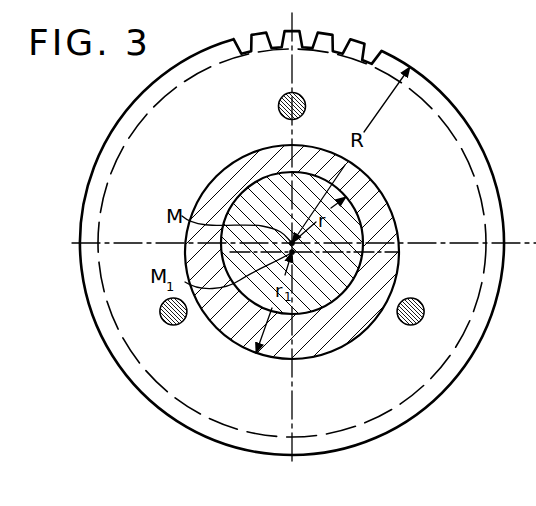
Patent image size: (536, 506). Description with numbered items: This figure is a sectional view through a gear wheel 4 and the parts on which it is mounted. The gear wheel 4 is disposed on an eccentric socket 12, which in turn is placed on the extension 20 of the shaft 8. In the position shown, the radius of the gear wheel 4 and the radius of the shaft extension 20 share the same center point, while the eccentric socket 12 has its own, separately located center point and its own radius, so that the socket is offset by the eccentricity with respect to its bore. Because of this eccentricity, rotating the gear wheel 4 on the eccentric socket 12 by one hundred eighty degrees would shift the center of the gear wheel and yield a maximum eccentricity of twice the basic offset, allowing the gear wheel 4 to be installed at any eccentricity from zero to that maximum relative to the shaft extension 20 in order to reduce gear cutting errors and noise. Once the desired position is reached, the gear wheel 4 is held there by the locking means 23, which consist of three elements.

The gear wheel 4 is at (376, 429).
The shaft 8 is at (358, 266).
The eccentric socket 12 is at (350, 320).
The shaft extension 20 is at (256, 193).
The locking means 23 is at (283, 94).